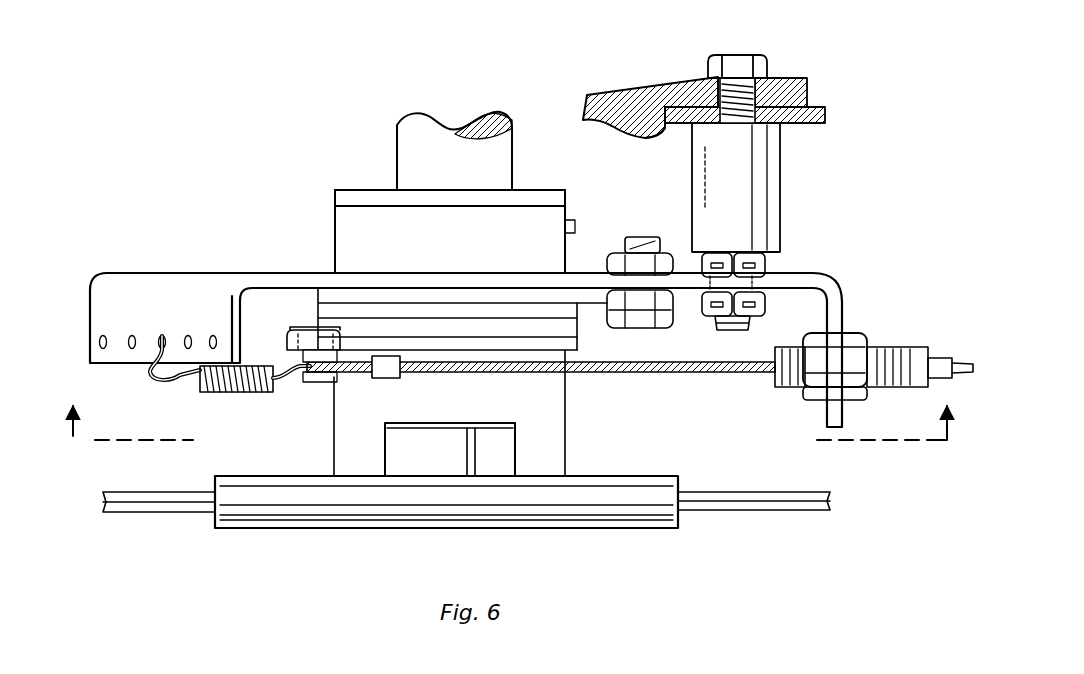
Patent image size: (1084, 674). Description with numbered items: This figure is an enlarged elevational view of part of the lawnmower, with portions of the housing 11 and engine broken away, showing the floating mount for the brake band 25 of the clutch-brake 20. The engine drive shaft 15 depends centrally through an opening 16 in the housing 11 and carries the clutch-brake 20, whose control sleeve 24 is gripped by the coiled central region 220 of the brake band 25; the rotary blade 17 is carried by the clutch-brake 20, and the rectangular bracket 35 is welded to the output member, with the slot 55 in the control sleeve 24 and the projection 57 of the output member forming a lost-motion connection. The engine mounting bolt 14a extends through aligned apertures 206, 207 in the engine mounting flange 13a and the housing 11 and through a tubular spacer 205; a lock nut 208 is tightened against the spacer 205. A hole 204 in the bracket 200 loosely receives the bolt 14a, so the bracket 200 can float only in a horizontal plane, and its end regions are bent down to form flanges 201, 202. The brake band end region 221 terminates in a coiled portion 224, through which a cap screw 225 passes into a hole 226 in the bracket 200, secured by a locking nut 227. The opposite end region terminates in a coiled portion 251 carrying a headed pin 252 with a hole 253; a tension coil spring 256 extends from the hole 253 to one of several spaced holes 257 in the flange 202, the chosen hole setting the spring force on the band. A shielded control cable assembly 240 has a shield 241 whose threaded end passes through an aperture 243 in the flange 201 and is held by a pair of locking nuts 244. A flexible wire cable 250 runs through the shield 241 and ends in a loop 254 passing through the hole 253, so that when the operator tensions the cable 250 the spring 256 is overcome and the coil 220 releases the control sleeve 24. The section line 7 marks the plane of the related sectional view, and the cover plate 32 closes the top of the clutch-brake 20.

The drive shaft 15 is at (430, 138).
The engine mounting flange 13a is at (683, 88).
The engine mounting bolt 14a is at (737, 66).
The aperture 206 is at (760, 97).
The housing 11 is at (820, 116).
The aperture 207 is at (745, 130).
The tubular spacer 205 is at (762, 200).
The opening 16 is at (664, 133).
The hole 226 is at (656, 250).
The locking nut 227 is at (680, 262).
The end region 221 is at (575, 300).
The clutch-brake 20 is at (572, 206).
The cover plate 32 is at (335, 197).
The control sleeve 24 is at (345, 243).
The brake band 25 is at (420, 303).
The flange 202 is at (92, 297).
The headed pin 252 is at (313, 332).
The coiled portion 251 is at (293, 343).
The spaced holes 257 is at (132, 350).
The tension coil spring 256 is at (218, 392).
The hole 253 is at (304, 382).
The loop 254 is at (368, 378).
The flexible wire cable 250 is at (460, 368).
The coiled central region 220 is at (578, 337).
The cap screw 225 is at (640, 322).
The coiled portion 224 is at (668, 296).
The lock nut 208 is at (772, 262).
The hole 204 is at (790, 281).
The bracket 200 is at (846, 288).
The flange 201 is at (837, 322).
The shielded control cable assembly 240 is at (918, 342).
The shield 241 is at (782, 384).
The locking nuts 244 is at (857, 388).
The aperture 243 is at (865, 400).
The section line 7 is at (509, 426).
The slot 55 is at (385, 450).
The projection 57 is at (495, 447).
The rotary blade 17 is at (760, 500).
The rectangular bracket 35 is at (645, 510).